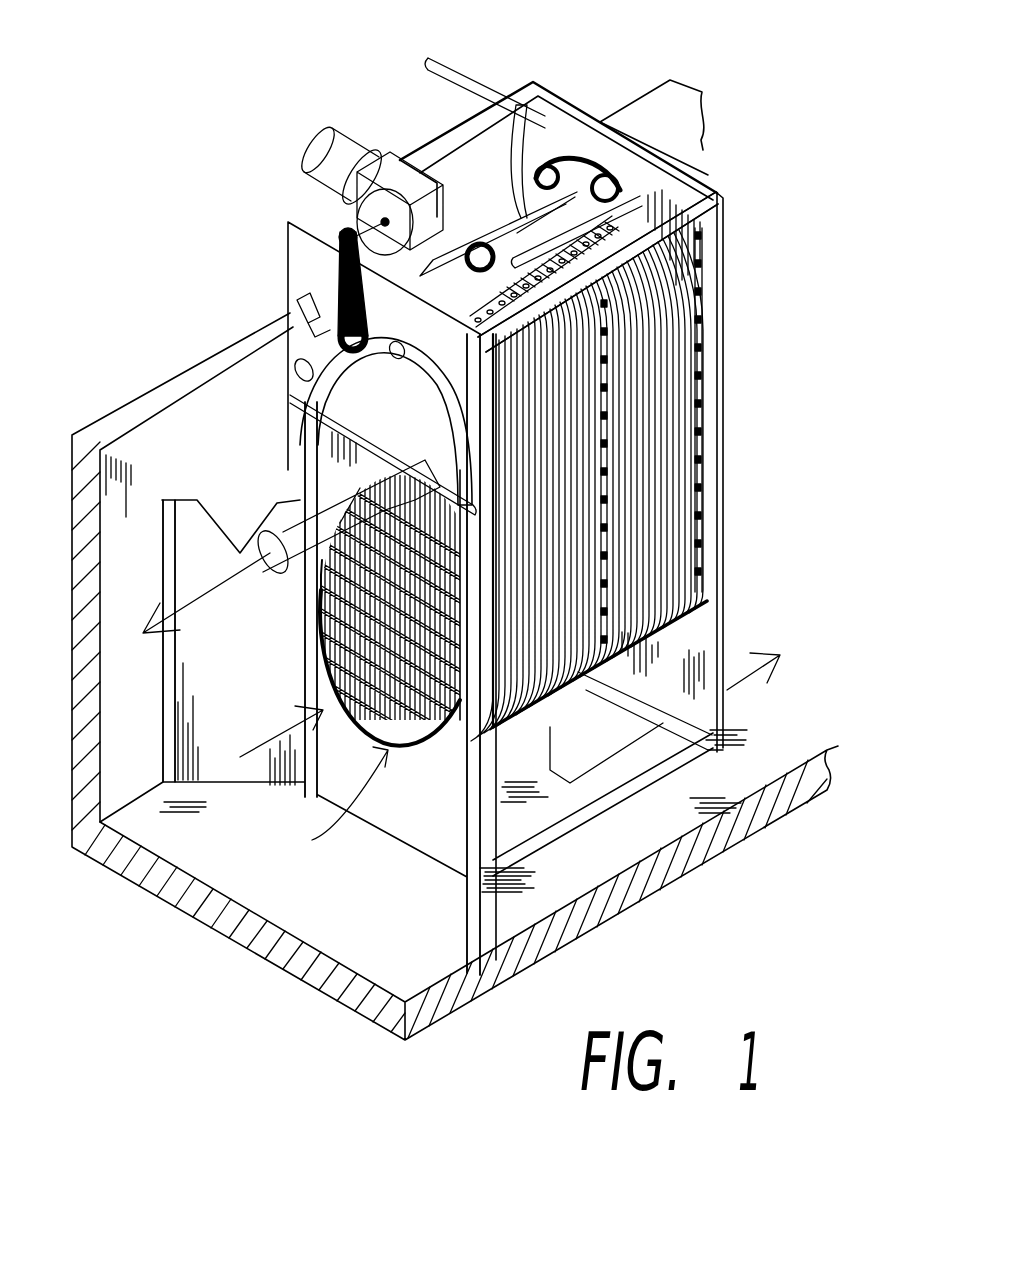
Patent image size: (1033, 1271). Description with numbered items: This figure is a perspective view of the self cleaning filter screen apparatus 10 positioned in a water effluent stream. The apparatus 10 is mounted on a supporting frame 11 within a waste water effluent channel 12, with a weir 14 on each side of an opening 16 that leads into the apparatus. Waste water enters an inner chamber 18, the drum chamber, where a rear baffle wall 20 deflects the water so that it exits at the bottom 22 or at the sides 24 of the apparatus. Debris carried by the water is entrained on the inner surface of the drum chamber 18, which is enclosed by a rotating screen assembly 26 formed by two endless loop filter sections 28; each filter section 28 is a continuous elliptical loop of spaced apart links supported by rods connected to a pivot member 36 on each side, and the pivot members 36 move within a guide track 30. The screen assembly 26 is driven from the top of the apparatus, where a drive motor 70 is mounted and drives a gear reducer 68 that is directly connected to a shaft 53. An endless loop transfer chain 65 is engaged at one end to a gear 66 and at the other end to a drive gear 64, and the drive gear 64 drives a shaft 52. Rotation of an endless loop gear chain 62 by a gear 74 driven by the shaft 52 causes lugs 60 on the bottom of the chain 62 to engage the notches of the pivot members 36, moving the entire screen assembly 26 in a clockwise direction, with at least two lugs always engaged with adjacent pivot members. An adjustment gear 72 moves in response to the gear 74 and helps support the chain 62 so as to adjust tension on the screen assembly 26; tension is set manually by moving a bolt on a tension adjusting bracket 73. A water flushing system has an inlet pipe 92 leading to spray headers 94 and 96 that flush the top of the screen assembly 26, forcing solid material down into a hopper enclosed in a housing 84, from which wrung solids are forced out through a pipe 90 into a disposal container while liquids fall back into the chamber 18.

The self cleaning filter screen apparatus 10 is at (180, 237).
The supporting frame 11 is at (455, 127).
The waste water effluent channel 12 is at (158, 349).
The weir 14 is at (207, 497).
The opening 16 is at (265, 704).
The inner chamber 18 is at (368, 617).
The rear baffle wall 20 is at (693, 653).
The bottom 22 is at (545, 707).
The sides 24 is at (668, 474).
The rotating screen assembly 26 is at (677, 380).
The endless loop filter section 28 is at (508, 373).
The guide track 30 is at (340, 684).
The pivot member 36 is at (697, 422).
The shaft 52 is at (514, 190).
The shaft 53 is at (350, 213).
The lug 60 is at (478, 248).
The endless loop gear chain 62 is at (551, 168).
The drive gear 64 is at (297, 360).
The endless loop transfer chain 65 is at (365, 298).
The gear 66 is at (307, 262).
The gear reducer 68 is at (390, 143).
The drive motor 70 is at (320, 123).
The adjustment gear 72 is at (535, 170).
The tension adjusting bracket 73 is at (305, 312).
The gear 74 is at (620, 173).
The housing 84 is at (353, 400).
The pipe 90 is at (290, 517).
The inlet pipe 92 is at (445, 62).
The spray header 94 is at (515, 150).
The spray header 96 is at (640, 207).